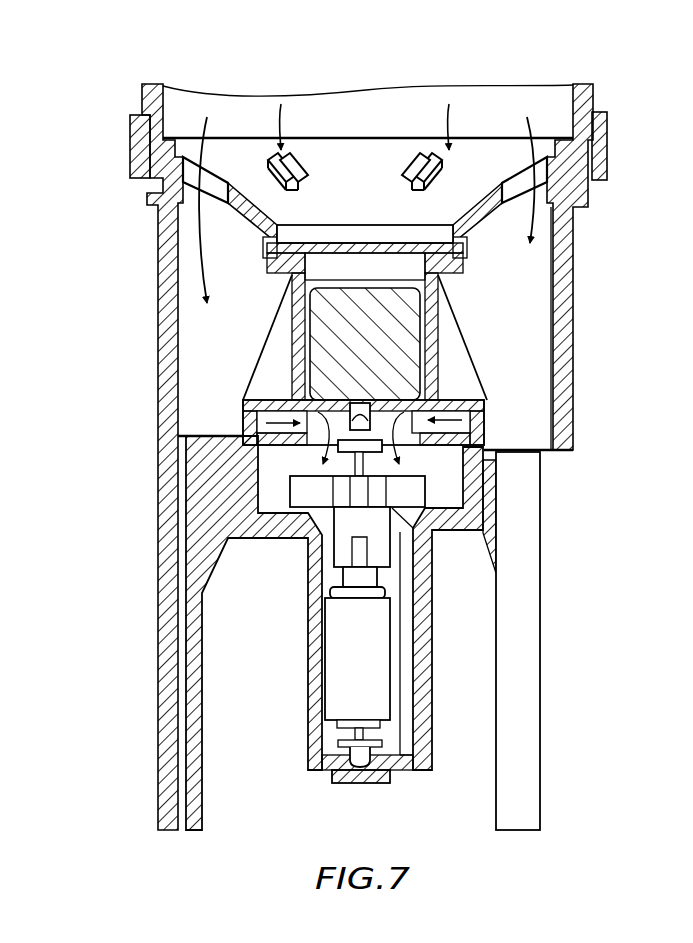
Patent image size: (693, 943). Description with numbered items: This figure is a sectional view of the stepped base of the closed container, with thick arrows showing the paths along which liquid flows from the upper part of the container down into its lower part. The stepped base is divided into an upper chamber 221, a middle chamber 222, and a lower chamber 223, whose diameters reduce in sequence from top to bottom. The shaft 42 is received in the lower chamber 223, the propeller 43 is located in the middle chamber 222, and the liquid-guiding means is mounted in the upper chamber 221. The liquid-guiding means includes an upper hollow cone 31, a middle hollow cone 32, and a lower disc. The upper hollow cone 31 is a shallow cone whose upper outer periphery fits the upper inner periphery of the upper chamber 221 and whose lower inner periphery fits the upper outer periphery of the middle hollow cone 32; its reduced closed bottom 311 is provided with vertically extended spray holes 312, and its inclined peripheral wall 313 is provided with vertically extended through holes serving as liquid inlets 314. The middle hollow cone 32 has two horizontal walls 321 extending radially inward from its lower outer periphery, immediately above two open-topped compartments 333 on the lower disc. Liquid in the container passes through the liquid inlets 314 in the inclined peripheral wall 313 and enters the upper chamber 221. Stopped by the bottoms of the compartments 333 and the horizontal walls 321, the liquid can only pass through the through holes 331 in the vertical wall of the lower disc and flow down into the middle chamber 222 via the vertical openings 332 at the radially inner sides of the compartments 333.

The upper chamber 221 is at (535, 270).
The middle chamber 222 is at (443, 497).
The lower chamber 223 is at (408, 658).
The upper hollow cone 31 is at (243, 228).
The bottom 311 is at (313, 250).
The spray holes 312 is at (366, 243).
The inclined peripheral wall 313 is at (490, 200).
The liquid inlets 314 is at (520, 185).
The middle hollow cone 32 is at (265, 320).
The horizontal walls 321 is at (455, 400).
The through holes 331 is at (475, 418).
The vertical opening 332 is at (473, 465).
The compartments 333 is at (307, 418).
The shaft 42 is at (347, 672).
The propeller 43 is at (310, 493).